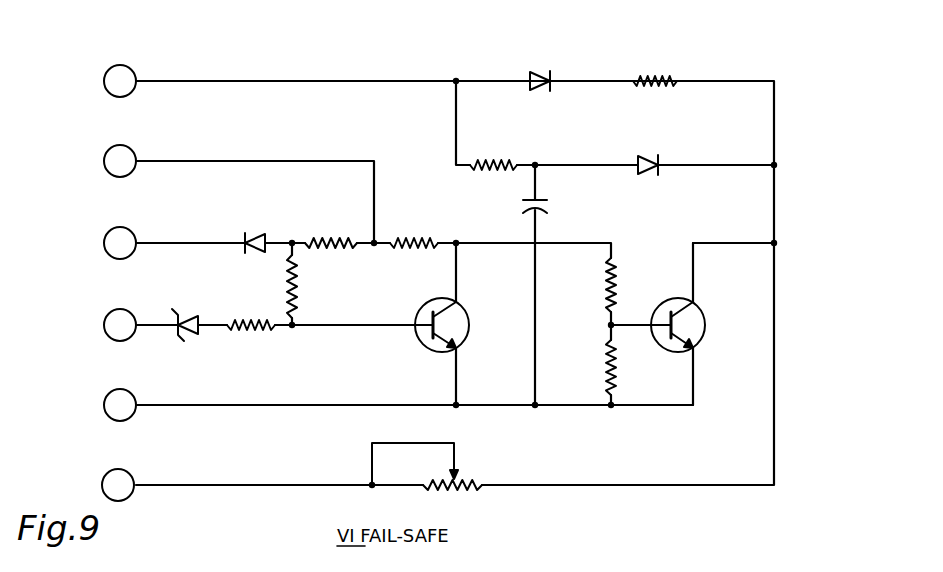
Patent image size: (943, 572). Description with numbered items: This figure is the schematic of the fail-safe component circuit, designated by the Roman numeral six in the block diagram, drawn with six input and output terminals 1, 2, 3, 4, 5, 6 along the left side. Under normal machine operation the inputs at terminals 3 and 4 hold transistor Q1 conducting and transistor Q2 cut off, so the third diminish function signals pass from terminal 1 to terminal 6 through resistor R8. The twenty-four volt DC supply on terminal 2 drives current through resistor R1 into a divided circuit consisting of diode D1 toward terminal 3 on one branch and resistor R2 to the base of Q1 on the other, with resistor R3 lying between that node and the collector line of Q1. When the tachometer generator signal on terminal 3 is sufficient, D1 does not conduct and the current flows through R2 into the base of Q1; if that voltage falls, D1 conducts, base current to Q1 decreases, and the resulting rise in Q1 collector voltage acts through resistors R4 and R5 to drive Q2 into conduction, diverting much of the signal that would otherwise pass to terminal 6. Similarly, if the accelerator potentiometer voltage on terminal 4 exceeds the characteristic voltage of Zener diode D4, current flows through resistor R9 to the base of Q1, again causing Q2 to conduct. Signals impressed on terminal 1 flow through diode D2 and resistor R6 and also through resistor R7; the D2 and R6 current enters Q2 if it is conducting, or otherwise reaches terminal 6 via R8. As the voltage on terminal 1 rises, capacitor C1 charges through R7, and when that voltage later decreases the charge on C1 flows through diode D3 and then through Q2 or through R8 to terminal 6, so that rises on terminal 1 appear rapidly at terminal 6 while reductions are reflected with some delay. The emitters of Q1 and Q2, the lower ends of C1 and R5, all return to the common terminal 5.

The terminal 1 is at (120, 81).
The terminal 2 is at (120, 161).
The terminal 3 is at (120, 243).
The terminal 4 is at (120, 325).
The terminal 5 is at (120, 405).
The terminal 6 is at (118, 485).
The diode D1 is at (255, 233).
The diode D2 is at (537, 96).
The diode D3 is at (649, 178).
The Zener diode D4 is at (189, 316).
The resistor R1 is at (331, 231).
The resistor R2 is at (305, 286).
The resistor R3 is at (414, 231).
The resistor R4 is at (594, 285).
The resistor R5 is at (594, 367).
The resistor R6 is at (655, 98).
The resistor R7 is at (493, 152).
The resistor R8 is at (427, 478).
The resistor R9 is at (251, 338).
The capacitor C1 is at (549, 209).
The transistor Q1 is at (455, 325).
The transistor Q2 is at (692, 325).